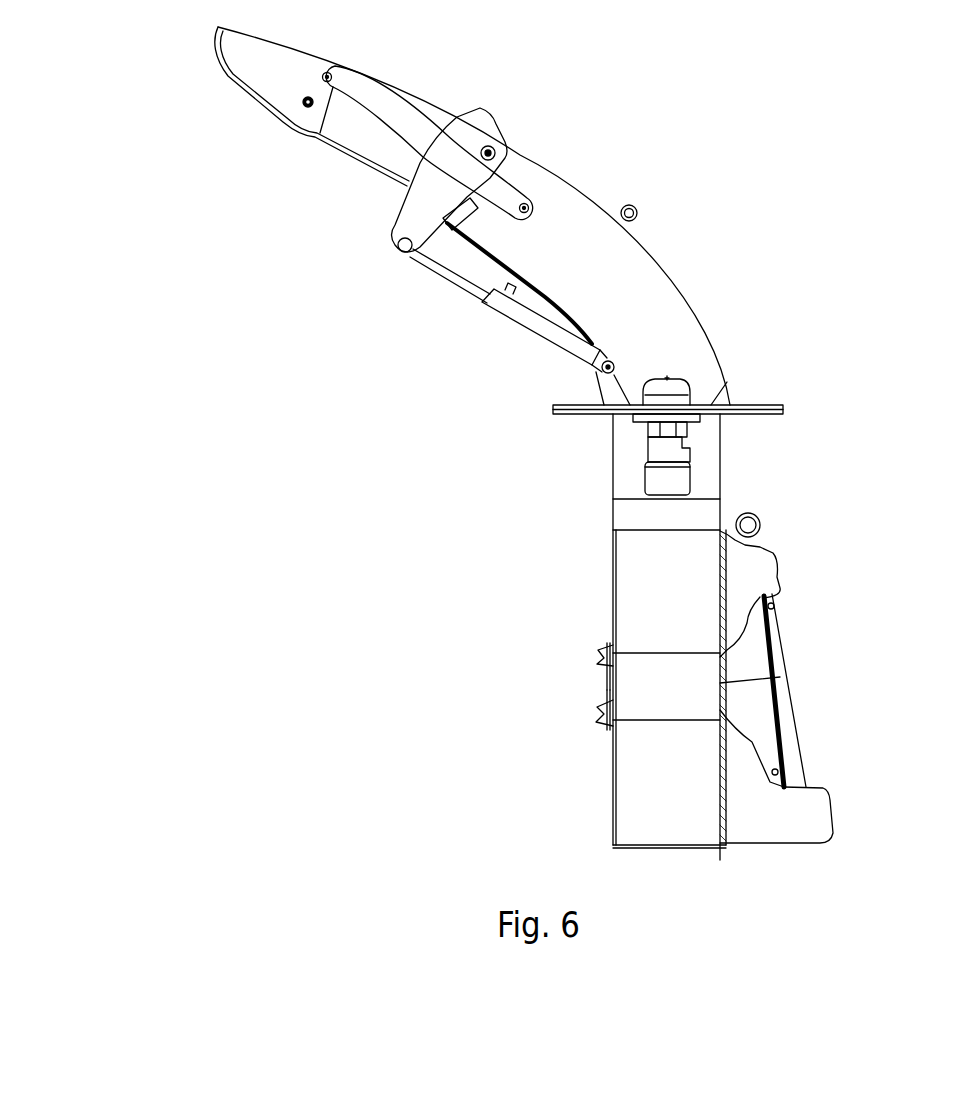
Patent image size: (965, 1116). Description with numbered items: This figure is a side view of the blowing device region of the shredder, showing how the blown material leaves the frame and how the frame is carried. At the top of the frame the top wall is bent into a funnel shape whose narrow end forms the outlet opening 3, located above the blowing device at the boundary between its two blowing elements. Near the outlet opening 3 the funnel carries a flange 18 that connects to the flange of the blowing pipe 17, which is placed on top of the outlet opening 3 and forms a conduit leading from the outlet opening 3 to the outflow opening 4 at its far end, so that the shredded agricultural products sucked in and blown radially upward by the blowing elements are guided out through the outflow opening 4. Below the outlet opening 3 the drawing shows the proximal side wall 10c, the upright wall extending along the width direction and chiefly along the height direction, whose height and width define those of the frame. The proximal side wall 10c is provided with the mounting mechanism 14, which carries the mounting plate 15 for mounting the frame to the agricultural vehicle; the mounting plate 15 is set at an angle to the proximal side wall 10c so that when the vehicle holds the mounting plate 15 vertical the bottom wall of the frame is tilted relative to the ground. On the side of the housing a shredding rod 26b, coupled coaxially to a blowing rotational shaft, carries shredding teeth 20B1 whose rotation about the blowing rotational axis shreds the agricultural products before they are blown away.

The outflow opening 4 is at (218, 106).
The blowing pipe 17 is at (633, 262).
The flange 18 is at (757, 401).
The outlet opening 3 is at (713, 465).
The proximal side wall 10c is at (721, 789).
The shredding teeth 20B1 is at (608, 659).
The shredding rod 26b is at (610, 687).
The mounting mechanism 14 is at (853, 787).
The mounting plate 15 is at (790, 720).